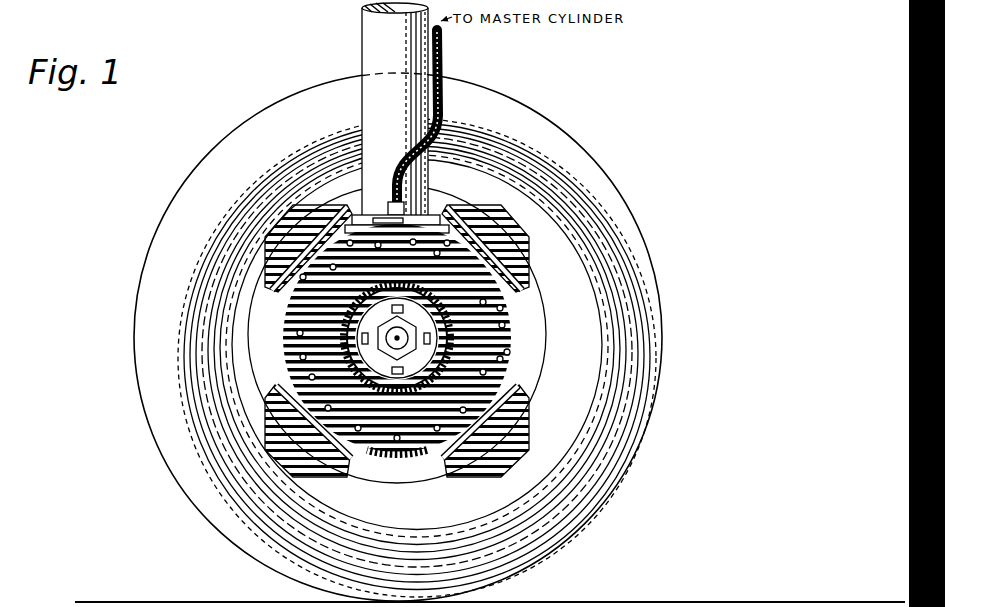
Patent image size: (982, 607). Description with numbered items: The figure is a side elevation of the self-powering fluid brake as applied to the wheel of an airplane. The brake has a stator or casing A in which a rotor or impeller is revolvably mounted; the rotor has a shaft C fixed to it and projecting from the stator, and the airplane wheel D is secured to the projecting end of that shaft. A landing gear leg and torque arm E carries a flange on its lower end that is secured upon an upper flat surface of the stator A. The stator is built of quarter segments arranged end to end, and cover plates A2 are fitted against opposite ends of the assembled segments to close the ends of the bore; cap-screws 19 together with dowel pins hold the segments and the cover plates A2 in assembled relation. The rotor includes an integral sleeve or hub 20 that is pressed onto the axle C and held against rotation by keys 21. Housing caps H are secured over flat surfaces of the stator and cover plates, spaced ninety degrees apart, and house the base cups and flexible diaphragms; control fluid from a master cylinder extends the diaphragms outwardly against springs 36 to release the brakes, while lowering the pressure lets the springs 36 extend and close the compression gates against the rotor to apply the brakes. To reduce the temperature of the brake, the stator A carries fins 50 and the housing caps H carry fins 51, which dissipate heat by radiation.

The landing gear leg and torque arm E is at (361, 33).
The springs 36 is at (445, 45).
The housing caps H is at (527, 229).
The keys 21 is at (503, 307).
The cap-screws 19 is at (432, 337).
The fins 50 is at (503, 358).
The airplane wheel D is at (663, 361).
The stator or casing A is at (358, 339).
The cover plates A2 is at (290, 360).
The shaft C is at (401, 341).
The sleeve or hub 20 is at (388, 389).
The fins 51 is at (273, 438).